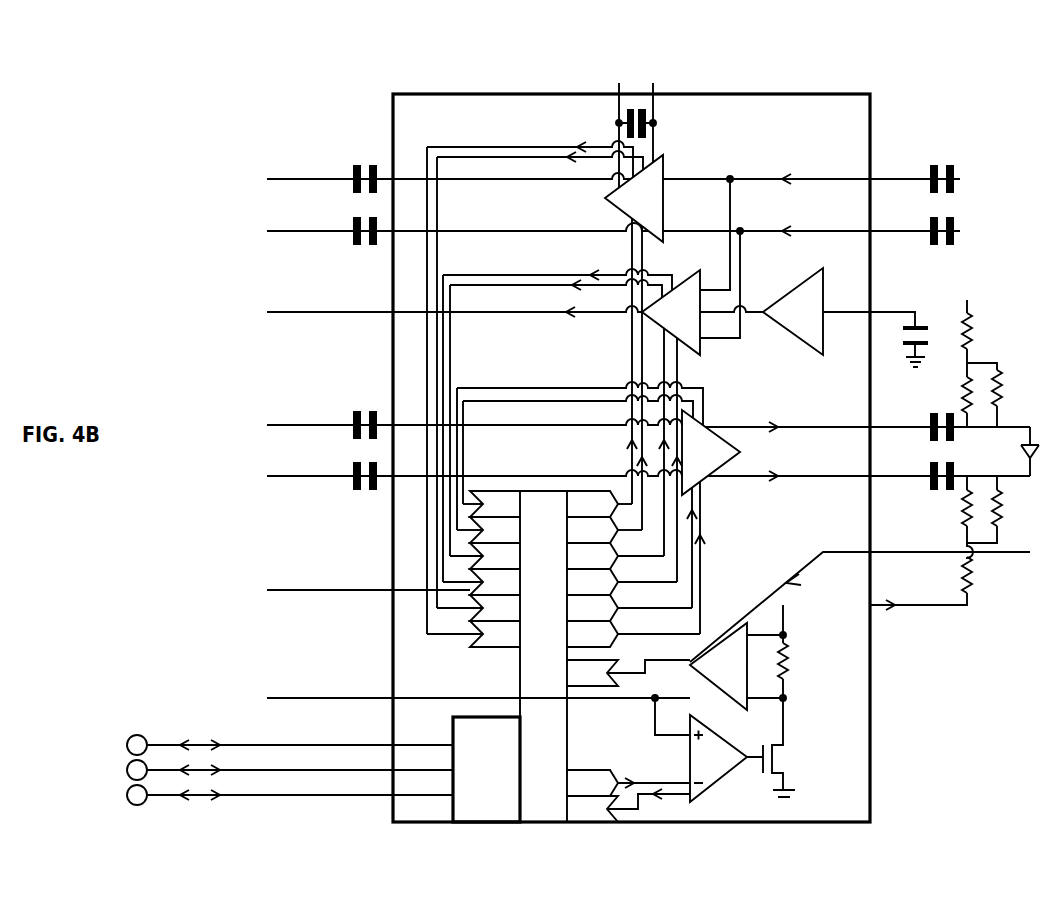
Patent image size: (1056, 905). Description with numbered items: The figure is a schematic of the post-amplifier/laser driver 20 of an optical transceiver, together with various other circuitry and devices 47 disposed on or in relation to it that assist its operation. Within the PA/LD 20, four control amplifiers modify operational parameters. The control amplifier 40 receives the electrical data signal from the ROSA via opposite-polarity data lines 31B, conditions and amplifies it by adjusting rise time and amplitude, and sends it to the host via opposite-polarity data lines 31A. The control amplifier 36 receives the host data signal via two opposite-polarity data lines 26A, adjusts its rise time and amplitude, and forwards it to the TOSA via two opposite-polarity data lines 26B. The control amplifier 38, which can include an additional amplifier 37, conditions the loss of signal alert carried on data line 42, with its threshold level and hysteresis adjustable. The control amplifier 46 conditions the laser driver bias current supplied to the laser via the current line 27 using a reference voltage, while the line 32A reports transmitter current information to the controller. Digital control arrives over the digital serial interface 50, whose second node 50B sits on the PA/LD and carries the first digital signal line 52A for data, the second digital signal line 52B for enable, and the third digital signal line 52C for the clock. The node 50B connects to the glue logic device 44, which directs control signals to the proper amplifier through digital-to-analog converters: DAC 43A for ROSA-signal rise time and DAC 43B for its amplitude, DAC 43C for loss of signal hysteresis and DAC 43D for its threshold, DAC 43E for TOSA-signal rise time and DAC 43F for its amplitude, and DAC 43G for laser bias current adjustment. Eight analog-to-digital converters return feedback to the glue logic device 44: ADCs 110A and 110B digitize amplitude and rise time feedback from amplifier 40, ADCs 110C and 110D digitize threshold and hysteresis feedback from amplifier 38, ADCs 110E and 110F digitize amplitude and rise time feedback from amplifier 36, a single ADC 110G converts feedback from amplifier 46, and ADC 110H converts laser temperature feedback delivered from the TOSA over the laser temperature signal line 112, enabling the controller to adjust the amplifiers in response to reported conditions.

The post-amplifier/laser driver 20 is at (892, 144).
The other circuitry and devices 47 is at (628, 74).
The opposite-polarity data lines 31A is at (257, 173).
The opposite-polarity data lines 31B is at (880, 173).
The opposite-polarity data lines 26A is at (257, 420).
The opposite-polarity data lines 26B is at (880, 420).
The control amplifier 40 is at (668, 160).
The additional amplifier 37 is at (750, 283).
The control amplifier 38 is at (703, 351).
The data line 42 is at (282, 311).
The control amplifier 36 is at (728, 470).
The LDI current line 27 is at (912, 606).
The laser temperature signal line 112 is at (783, 580).
The analog-to-digital converter 110A is at (480, 630).
The analog-to-digital converter 110B is at (480, 603).
The analog-to-digital converter 110C is at (480, 576).
The analog-to-digital converter 110D is at (480, 548).
The analog-to-digital converter 110E is at (480, 522).
The analog-to-digital converter 110F is at (480, 497).
The analog-to-digital converter 110G is at (596, 822).
The analog-to-digital converter 110H is at (597, 688).
The DAC 43A is at (564, 520).
The DAC 43B is at (564, 545).
The DAC 43C is at (564, 570).
The DAC 43D is at (564, 595).
The DAC 43E is at (564, 622).
The DAC 43F is at (564, 648).
The DAC 43G is at (594, 770).
The control amplifier 46 is at (704, 790).
The line 32A is at (313, 696).
The second node 50B is at (478, 823).
The glue logic device 44 is at (520, 710).
The digital serial interface 50 is at (290, 777).
The first digital signal line 52A is at (281, 744).
The second digital signal line 52B is at (368, 770).
The third digital signal line 52C is at (281, 797).